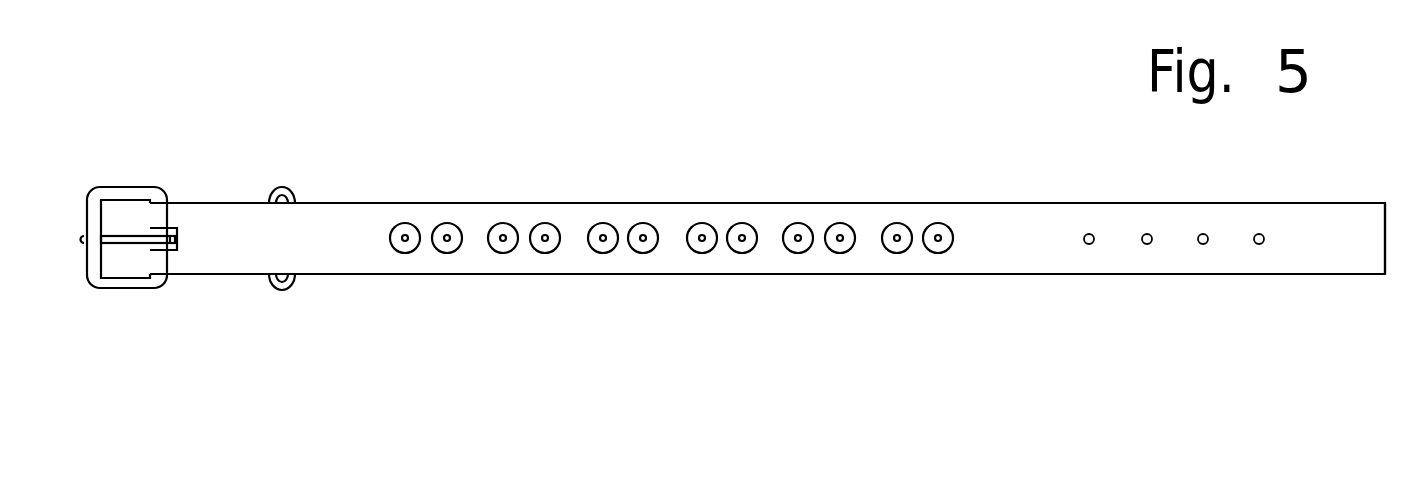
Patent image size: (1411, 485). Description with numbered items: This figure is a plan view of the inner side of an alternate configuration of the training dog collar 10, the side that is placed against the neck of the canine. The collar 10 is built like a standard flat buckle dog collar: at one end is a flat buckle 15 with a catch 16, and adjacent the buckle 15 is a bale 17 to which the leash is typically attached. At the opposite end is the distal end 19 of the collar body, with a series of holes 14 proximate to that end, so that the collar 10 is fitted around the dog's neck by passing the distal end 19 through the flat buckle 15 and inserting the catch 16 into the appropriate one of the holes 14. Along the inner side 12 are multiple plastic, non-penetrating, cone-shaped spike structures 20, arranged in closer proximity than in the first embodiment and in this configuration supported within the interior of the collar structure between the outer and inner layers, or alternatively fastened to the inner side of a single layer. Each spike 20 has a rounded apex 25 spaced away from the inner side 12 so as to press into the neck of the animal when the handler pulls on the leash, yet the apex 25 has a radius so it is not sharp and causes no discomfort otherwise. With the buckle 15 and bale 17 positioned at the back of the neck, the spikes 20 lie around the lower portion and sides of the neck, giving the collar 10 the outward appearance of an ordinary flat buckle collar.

The training dog collar 10 is at (258, 104).
The inner side 12 is at (973, 253).
The holes 14 is at (1200, 245).
The flat buckle 15 is at (128, 284).
The catch 16 is at (112, 243).
The bale 17 is at (282, 188).
The distal end 19 is at (1360, 260).
The spikes 20 is at (798, 245).
The apex 25 is at (603, 238).